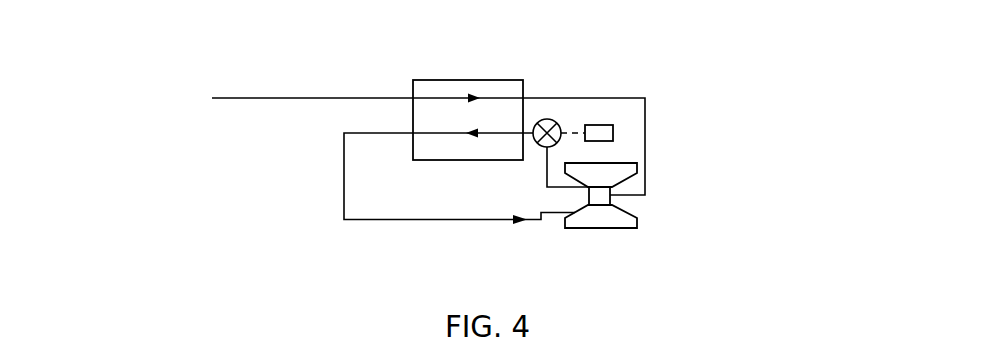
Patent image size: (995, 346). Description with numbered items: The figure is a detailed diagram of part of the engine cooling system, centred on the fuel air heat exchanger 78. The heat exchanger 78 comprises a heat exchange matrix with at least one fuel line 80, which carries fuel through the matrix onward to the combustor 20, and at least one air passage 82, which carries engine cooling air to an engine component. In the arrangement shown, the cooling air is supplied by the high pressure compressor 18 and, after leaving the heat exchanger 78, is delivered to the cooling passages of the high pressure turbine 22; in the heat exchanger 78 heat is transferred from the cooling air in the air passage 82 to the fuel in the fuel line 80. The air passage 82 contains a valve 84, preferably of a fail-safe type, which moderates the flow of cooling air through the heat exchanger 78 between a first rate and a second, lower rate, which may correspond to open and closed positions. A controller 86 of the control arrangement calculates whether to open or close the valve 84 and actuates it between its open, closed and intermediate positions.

The high pressure compressor 18 is at (637, 163).
The combustor 20 is at (588, 198).
The high pressure turbine 22 is at (636, 213).
The fuel air heat exchanger 78 is at (455, 80).
The fuel line 80 is at (333, 97).
The air passage 82 is at (420, 220).
The valve 84 is at (555, 121).
The controller 86 is at (600, 125).